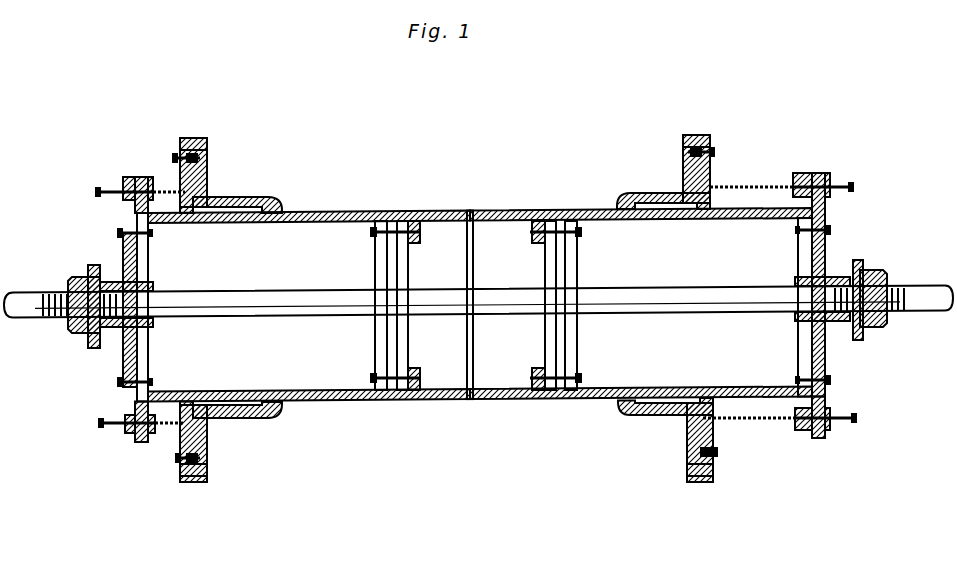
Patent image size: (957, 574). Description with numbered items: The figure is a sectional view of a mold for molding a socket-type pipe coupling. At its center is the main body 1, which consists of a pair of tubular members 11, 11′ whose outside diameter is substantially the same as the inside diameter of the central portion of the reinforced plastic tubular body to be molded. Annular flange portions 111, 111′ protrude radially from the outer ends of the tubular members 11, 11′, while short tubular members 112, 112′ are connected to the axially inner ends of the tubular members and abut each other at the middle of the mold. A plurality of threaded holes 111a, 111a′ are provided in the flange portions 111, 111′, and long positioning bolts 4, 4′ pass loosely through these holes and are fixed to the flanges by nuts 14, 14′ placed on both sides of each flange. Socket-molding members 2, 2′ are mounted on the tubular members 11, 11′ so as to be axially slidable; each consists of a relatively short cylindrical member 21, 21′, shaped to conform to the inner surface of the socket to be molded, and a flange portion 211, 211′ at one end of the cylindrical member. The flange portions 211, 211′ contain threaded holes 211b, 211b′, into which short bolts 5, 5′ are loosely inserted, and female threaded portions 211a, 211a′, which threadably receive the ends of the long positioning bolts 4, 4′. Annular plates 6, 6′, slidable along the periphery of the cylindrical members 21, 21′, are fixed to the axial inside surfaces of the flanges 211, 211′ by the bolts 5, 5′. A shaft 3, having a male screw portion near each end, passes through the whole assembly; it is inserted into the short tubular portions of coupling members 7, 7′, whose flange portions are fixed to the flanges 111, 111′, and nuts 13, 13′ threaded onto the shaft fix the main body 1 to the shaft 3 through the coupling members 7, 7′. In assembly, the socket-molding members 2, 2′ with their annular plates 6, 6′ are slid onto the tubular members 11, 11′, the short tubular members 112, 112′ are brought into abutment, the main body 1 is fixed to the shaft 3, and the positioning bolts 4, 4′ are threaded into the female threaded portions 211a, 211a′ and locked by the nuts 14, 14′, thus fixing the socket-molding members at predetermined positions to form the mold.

The main body 1 is at (336, 190).
The socket-molding member 2 is at (240, 190).
The socket-molding member 2′ is at (654, 188).
The shaft 3 is at (307, 291).
The long positioning bolt 4 is at (108, 189).
The long positioning bolt 4′ is at (853, 186).
The short bolt 5 is at (175, 461).
The short bolt 5′ is at (717, 455).
The annular plate 6 is at (202, 483).
The annular plate 6′ is at (693, 479).
The coupling member 7 is at (113, 331).
The coupling member 7′ is at (840, 321).
The tubular member 11 is at (356, 401).
The tubular member 11′ is at (587, 399).
The nut 13 is at (77, 276).
The nut 13′ is at (887, 270).
The nut 14 is at (147, 186).
The nut 14′ is at (815, 186).
The short cylindrical member 21 is at (278, 417).
The short cylindrical member 21′ is at (622, 408).
The annular flange portion 111 is at (138, 402).
The annular flange portion 111′ is at (813, 394).
The threaded hole 111a is at (138, 442).
The threaded hole 111a′ is at (803, 176).
The short tubular member 112 is at (441, 398).
The short tubular member 112′ is at (510, 402).
The flange portion 211 is at (208, 445).
The flange portion 211′ is at (710, 166).
The female threaded portion 211a is at (211, 428).
The female threaded portion 211a′ is at (711, 172).
The threaded hole 211b is at (181, 139).
The threaded hole 211b′ is at (702, 135).